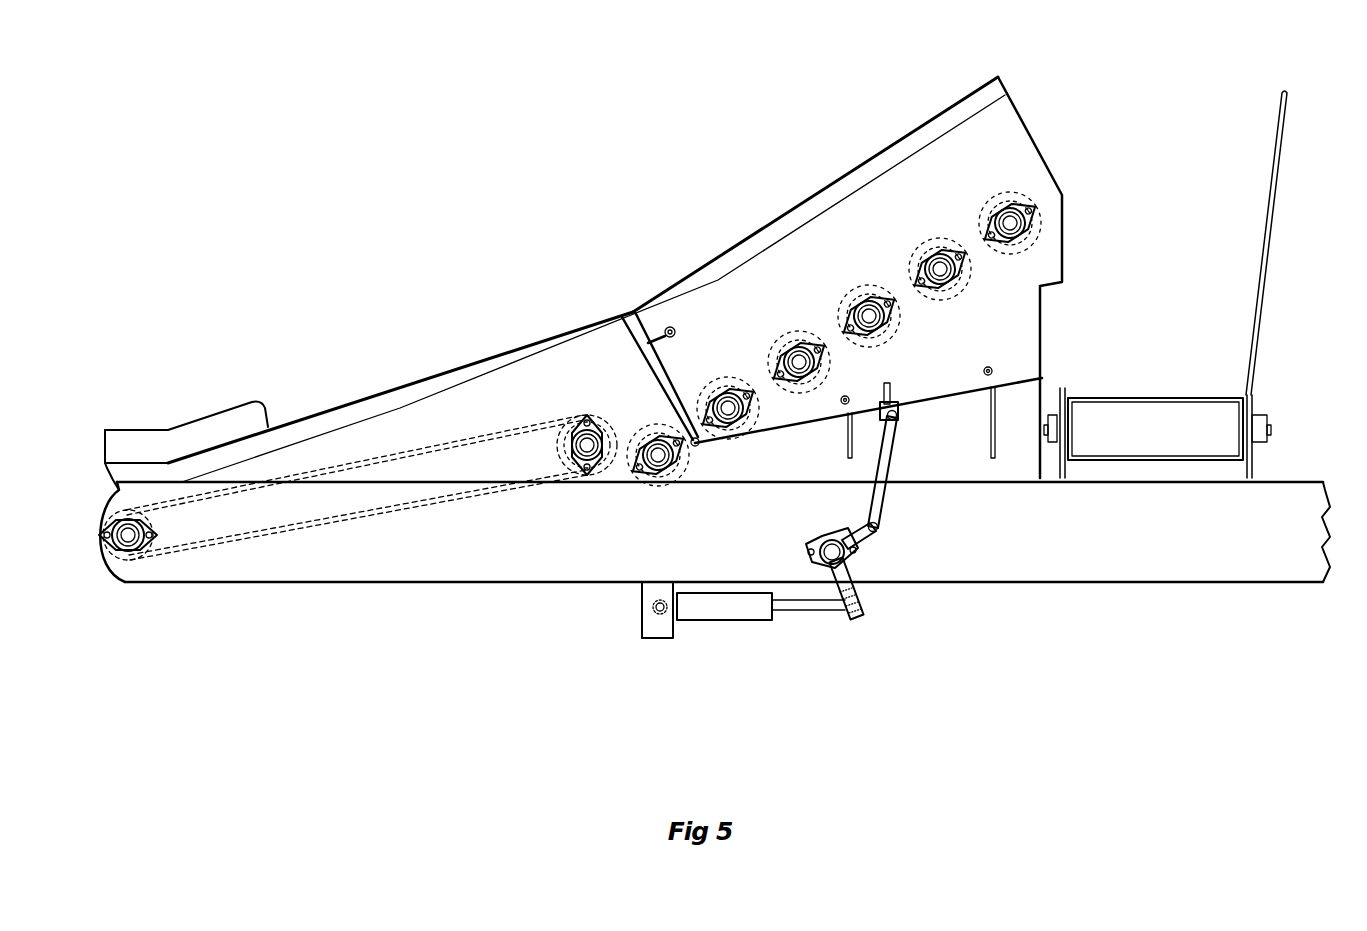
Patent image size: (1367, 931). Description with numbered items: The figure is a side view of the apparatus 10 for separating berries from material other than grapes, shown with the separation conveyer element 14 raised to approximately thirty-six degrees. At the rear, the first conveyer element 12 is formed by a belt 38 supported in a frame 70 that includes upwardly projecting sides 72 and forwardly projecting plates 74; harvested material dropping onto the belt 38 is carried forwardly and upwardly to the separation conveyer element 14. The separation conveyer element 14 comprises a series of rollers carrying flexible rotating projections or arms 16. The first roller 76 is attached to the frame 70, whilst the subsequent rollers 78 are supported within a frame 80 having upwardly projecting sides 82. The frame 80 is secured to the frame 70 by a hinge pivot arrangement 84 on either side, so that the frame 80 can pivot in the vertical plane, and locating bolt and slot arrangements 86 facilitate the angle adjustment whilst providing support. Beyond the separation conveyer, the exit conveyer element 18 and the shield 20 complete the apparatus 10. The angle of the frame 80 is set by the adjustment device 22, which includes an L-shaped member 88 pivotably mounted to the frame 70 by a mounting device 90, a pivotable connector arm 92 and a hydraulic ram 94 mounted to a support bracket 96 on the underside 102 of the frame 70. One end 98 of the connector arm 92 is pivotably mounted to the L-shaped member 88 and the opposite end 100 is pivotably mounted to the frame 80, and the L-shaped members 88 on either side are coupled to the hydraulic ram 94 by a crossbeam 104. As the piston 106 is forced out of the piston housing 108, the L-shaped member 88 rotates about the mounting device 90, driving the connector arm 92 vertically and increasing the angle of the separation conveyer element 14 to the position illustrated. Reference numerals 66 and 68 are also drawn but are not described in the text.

The apparatus 10 is at (442, 225).
The first conveyer element 12 is at (318, 380).
The separation conveyer element 14 is at (803, 178).
The rotating projections or arms 16 is at (1000, 190).
The exit conveyer element 18 is at (1157, 438).
The shield 20 is at (1270, 227).
The adjustment device 22 is at (740, 637).
The belt 38 is at (284, 540).
The lip plate 66 is at (180, 440).
The drive shaft 68 is at (1271, 428).
The frame 70 is at (352, 563).
The upwardly projecting sides 72 is at (463, 372).
The forwardly projecting plates 74 is at (939, 452).
The first roller 76 is at (648, 440).
The subsequent rollers 78 is at (727, 390).
The frame 80 is at (995, 335).
The upwardly projecting sides 82 is at (921, 140).
The hinge pivot arrangement 84 is at (640, 312).
The locating bolt and slot arrangements 86 is at (688, 330).
The L-shaped member 88 is at (862, 578).
The mounting device 90 is at (806, 553).
The pivotable connector arm 92 is at (882, 495).
The hydraulic ram 94 is at (705, 612).
The support bracket 96 is at (640, 625).
The one end 98 is at (880, 530).
The opposite end 100 is at (880, 420).
The underside 102 is at (398, 600).
The crossbeam 104 is at (868, 620).
The piston 106 is at (790, 608).
The piston housing 108 is at (700, 592).